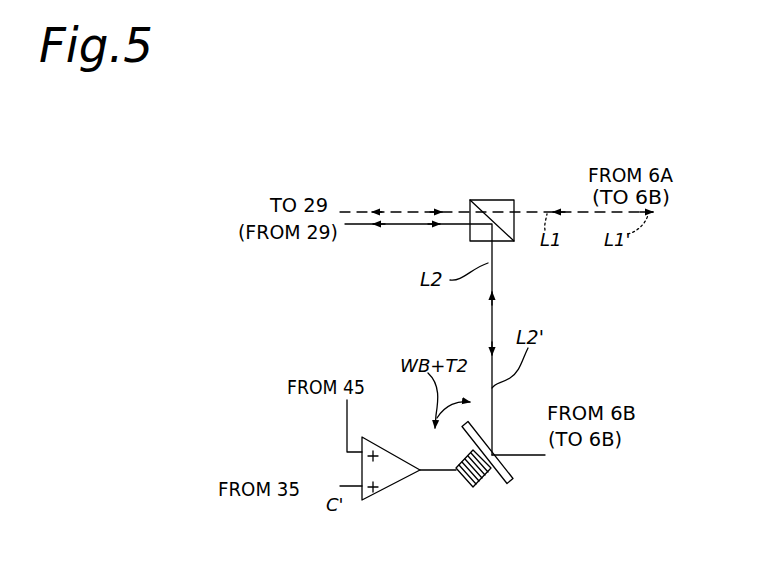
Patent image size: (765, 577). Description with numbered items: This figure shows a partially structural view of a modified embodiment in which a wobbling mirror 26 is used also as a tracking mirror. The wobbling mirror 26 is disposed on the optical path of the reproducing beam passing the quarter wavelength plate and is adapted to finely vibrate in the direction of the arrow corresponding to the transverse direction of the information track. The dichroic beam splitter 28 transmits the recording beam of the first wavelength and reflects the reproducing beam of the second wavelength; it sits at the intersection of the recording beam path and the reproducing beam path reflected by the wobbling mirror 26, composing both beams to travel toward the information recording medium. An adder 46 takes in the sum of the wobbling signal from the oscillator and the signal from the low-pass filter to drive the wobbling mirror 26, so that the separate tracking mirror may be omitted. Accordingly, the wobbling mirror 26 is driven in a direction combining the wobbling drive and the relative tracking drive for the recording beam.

The dichroic beam splitter 28 is at (488, 200).
The adder 46 is at (408, 478).
The wobbling mirror 26 is at (507, 482).